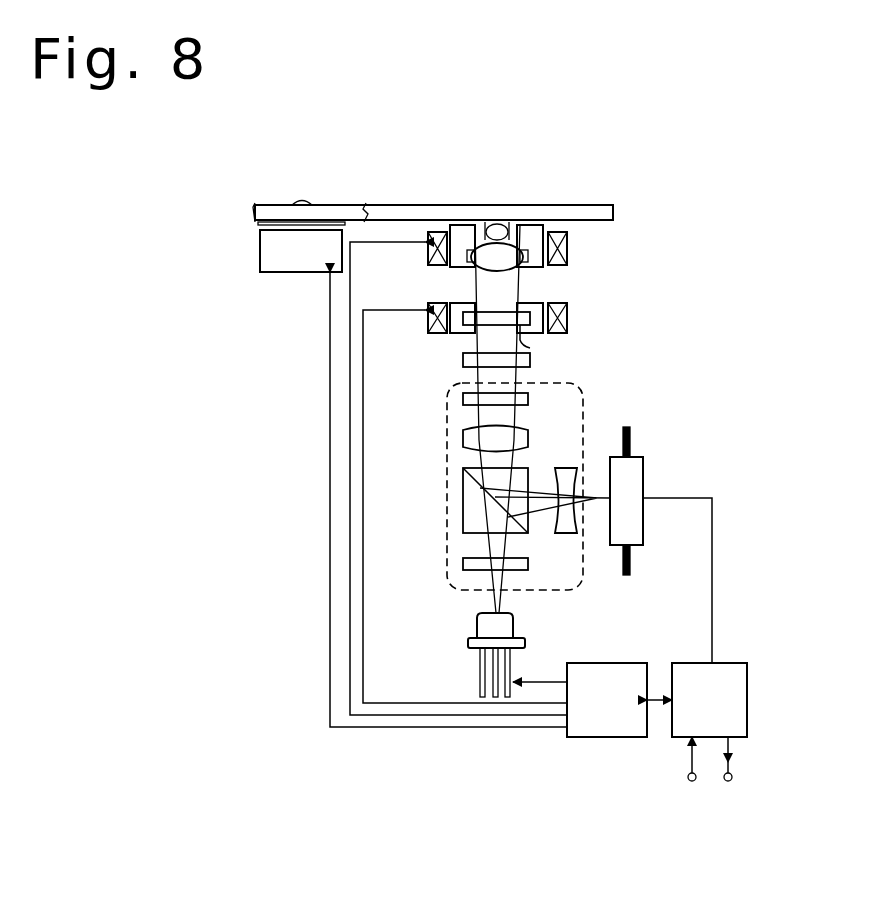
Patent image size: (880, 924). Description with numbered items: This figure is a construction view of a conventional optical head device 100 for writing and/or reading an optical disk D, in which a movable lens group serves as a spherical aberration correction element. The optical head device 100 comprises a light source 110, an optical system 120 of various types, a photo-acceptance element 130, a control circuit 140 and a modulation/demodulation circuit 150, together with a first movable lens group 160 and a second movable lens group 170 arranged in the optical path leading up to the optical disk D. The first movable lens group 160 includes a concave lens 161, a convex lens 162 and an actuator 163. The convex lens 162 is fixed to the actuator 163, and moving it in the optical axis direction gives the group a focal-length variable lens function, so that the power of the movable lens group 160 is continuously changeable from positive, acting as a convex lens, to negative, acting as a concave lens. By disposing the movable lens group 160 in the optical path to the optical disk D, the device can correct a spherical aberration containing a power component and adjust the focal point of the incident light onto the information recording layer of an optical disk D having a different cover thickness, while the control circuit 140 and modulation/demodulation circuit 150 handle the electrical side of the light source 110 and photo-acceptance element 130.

The optical head device 100 is at (318, 167).
The optical disk D is at (586, 206).
The second movable lens group 170 is at (592, 222).
The first movable lens group 160 is at (590, 298).
The actuator 163 is at (428, 318).
The concave lens 161 is at (463, 360).
The convex lens 162 is at (520, 332).
The optical system 120 is at (582, 406).
The photo-acceptance element 130 is at (641, 478).
The light source 110 is at (485, 625).
The control circuit 140 is at (618, 663).
The modulation/demodulation circuit 150 is at (727, 663).